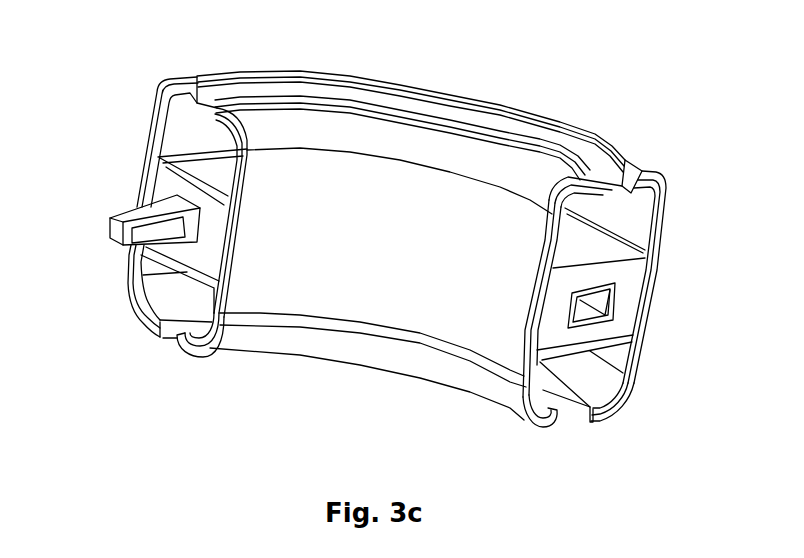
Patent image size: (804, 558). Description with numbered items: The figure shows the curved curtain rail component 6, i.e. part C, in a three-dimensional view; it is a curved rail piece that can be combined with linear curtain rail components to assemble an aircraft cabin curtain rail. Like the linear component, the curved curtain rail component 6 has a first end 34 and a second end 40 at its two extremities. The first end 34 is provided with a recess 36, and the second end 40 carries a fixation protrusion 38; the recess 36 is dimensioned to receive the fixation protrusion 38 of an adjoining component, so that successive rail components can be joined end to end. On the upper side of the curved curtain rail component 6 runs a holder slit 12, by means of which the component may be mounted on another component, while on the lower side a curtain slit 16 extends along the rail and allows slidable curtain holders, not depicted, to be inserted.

The curved curtain rail component 6 is at (372, 266).
The holder slit 12 is at (249, 91).
The curtain slit 16 is at (164, 358).
The first end 34 is at (520, 288).
The recess 36 is at (600, 296).
The fixation protrusion 38 is at (100, 226).
The second end 40 is at (250, 229).